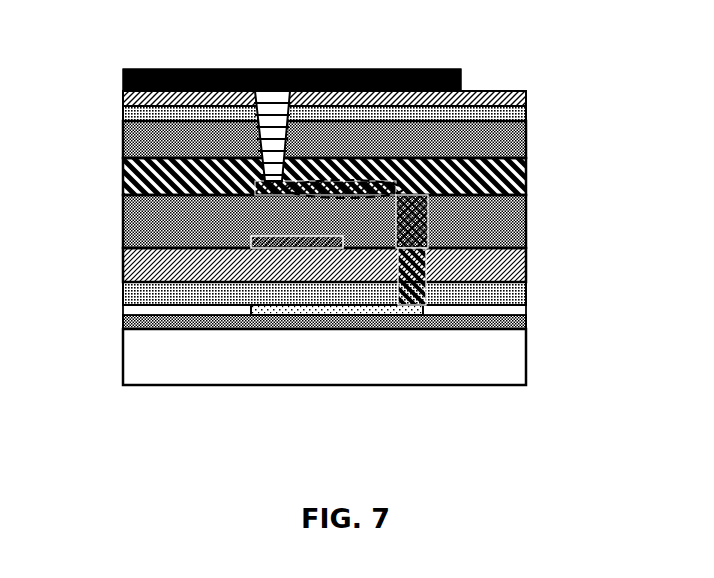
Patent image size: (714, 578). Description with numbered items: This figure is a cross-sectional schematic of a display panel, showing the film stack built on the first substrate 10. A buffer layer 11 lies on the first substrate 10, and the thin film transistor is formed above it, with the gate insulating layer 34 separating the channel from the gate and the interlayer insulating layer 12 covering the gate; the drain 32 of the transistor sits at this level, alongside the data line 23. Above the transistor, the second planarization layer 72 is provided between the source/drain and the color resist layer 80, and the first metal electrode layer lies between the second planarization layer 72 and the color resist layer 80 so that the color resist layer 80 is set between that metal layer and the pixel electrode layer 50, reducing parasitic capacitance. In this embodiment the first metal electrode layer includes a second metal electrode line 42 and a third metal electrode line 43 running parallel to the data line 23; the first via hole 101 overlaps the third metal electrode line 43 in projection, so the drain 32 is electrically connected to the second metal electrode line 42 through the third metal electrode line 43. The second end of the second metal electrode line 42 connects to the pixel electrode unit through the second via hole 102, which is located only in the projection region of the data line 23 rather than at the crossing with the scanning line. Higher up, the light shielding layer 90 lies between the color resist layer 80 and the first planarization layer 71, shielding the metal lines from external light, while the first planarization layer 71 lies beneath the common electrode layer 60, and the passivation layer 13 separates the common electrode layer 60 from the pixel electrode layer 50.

The first substrate 10 is at (518, 371).
The buffer layer 11 is at (518, 313).
The data line 23 is at (263, 306).
The second metal electrode line 42 is at (297, 310).
The third metal electrode line 43 is at (345, 306).
The gate insulating layer 34 is at (155, 297).
The interlayer insulating layer 12 is at (518, 254).
The first via hole 101 is at (518, 200).
The second planarization layer 72 is at (518, 222).
The color resist layer 80 is at (518, 170).
The drain 32 is at (405, 300).
The second via hole 102 is at (115, 133).
The first planarization layer 71 is at (518, 118).
The common electrode layer 60 is at (115, 107).
The passivation layer 13 is at (518, 83).
The light shielding layer 90 is at (345, 62).
The pixel electrode layer 50 is at (457, 72).